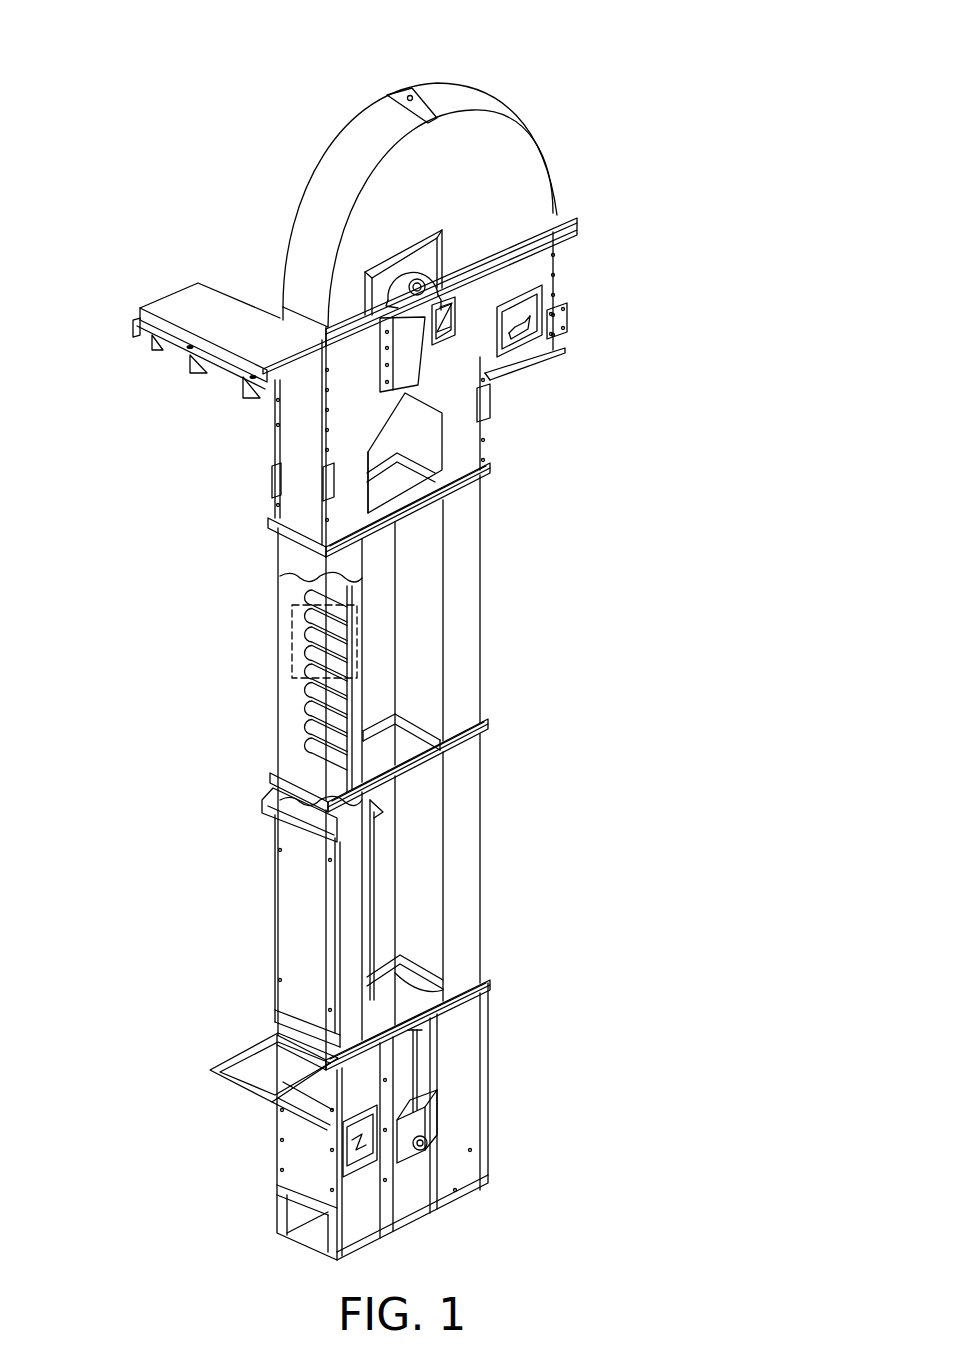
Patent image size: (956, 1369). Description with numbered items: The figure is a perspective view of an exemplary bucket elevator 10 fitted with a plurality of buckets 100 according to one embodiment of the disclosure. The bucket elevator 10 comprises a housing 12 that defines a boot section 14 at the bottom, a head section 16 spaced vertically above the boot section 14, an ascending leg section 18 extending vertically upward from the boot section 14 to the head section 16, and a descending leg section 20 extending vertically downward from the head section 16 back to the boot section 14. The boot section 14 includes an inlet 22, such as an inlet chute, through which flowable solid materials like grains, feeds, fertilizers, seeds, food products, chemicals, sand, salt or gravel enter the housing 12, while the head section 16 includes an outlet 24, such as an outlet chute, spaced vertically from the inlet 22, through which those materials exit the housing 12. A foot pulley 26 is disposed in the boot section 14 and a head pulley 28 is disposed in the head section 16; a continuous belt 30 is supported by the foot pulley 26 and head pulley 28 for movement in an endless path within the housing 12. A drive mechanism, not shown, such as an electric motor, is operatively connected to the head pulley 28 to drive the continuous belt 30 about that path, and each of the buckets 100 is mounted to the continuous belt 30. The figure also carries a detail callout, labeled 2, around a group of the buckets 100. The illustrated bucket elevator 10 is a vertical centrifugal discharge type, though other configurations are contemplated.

The bucket elevator 10 is at (566, 64).
The housing 12 is at (256, 491).
The boot section 14 is at (490, 1038).
The head section 16 is at (360, 132).
The ascending leg section 18 is at (300, 922).
The descending leg section 20 is at (460, 810).
The inlet 22 is at (278, 1098).
The outlet 24 is at (547, 290).
The foot pulley 26 is at (430, 1145).
The head pulley 28 is at (460, 289).
The continuous belt 30 is at (360, 697).
The buckets 100 is at (275, 727).
The bucket segment 2 is at (282, 622).